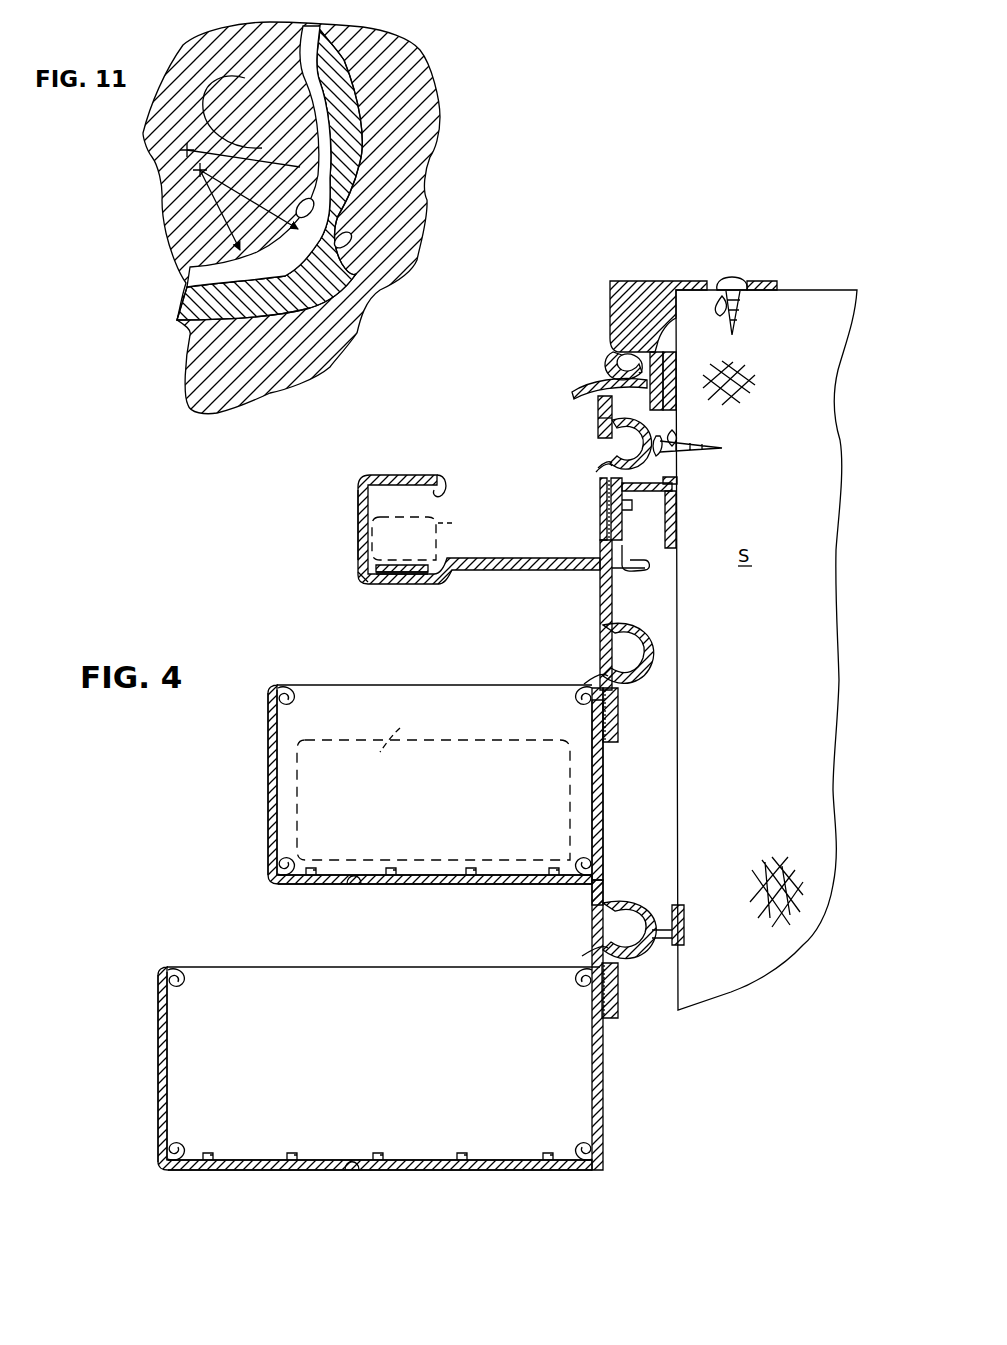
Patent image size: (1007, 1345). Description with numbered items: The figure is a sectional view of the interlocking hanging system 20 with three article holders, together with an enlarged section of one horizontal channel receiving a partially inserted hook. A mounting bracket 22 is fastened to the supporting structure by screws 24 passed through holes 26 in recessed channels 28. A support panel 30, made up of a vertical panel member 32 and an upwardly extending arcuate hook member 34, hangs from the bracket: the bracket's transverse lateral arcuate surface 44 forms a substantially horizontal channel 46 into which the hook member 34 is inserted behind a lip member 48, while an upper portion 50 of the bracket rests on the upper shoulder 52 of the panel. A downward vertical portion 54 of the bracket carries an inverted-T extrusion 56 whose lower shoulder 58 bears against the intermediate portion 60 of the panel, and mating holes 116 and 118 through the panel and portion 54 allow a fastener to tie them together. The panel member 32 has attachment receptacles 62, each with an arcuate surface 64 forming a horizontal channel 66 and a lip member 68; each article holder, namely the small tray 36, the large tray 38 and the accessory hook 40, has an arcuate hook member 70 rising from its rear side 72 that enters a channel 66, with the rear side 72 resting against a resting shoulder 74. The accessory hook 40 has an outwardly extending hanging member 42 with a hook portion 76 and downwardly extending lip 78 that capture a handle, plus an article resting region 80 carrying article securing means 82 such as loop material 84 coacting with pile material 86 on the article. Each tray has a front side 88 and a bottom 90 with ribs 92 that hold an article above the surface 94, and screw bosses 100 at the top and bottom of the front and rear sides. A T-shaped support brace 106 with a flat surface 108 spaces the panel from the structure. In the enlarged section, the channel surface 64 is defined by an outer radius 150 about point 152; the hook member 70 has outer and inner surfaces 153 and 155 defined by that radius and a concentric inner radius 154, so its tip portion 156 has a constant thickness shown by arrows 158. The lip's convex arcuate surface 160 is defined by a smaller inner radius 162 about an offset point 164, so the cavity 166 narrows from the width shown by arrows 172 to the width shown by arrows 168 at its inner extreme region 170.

In FIG. 4, the interlocking hanging system 20 is at (634, 1145).
In FIG. 4, the mounting bracket 22 is at (622, 305).
In FIG. 4, the screws 24 is at (737, 300).
In FIG. 4, the holes 26 is at (722, 300).
In FIG. 4, the recessed channels 28 is at (737, 276).
In FIG. 4, the support panel 30 is at (645, 612).
In FIG. 4, the vertical panel member 32 is at (604, 780).
In FIG. 4, the arcuate hook member 34 is at (655, 370).
In FIG. 4, the small tray 36 is at (266, 800).
In FIG. 4, the large tray 38 is at (156, 1088).
In FIG. 4, the accessory hook 40 is at (452, 534).
In FIG. 4, the outwardly extending hanging member 42 is at (400, 585).
In FIG. 4, the transverse lateral arcuate surface 44 is at (612, 350).
In FIG. 4, the substantially horizontal channel 46 is at (586, 386).
In FIG. 4, the lip member 48 is at (622, 366).
In FIG. 4, the upper portion 50 is at (598, 404).
In FIG. 4, the upper shoulder 52 is at (600, 420).
In FIG. 4, the downward vertical portion 54 is at (632, 528).
In FIG. 4, the inverted-T extrusion 56 is at (636, 556).
In FIG. 4, the lower shoulder 58 is at (620, 567).
In FIG. 4, the intermediate portion 60 is at (600, 580).
In FIG. 4, the attachment receptacle 62 is at (592, 450).
In FIG. 11, the transverse lateral arcuate surface 64 is at (358, 148).
In FIG. 11, the substantially horizontal channel 66 is at (354, 230).
In FIG. 11, the lip member 68 is at (240, 203).
In FIG. 4, the lip member 68 is at (605, 462).
In FIG. 11, the arcuate hook member 70 is at (332, 122).
In FIG. 4, the arcuate hook member 70 is at (620, 903).
In FIG. 4, the rear side 72 is at (600, 505).
In FIG. 4, the resting shoulder 74 is at (598, 482).
In FIG. 4, the hook portion 76 is at (362, 488).
In FIG. 4, the downwardly extending lip 78 is at (442, 490).
In FIG. 4, the article resting region 80 is at (384, 585).
In FIG. 4, the article securing means 82 is at (352, 573).
In FIG. 4, the loop material 84 is at (372, 577).
In FIG. 4, the pile material 86 is at (447, 587).
In FIG. 4, the front side 88 is at (268, 830).
In FIG. 4, the bottom 90 is at (437, 885).
In FIG. 4, the ribs 92 is at (308, 867).
In FIG. 4, the surface 94 is at (352, 885).
In FIG. 4, the screw bosses 100 is at (298, 703).
In FIG. 4, the support brace 106 is at (676, 950).
In FIG. 4, the flat surface 108 is at (684, 926).
In FIG. 4, the hole 116 is at (608, 522).
In FIG. 4, the hole 118 is at (632, 505).
In FIG. 11, the outer radius 150 is at (298, 278).
In FIG. 11, the point 152 is at (196, 172).
In FIG. 11, the outer surface 153 is at (330, 222).
In FIG. 11, the inner radius 154 is at (282, 195).
In FIG. 11, the inner surface 155 is at (325, 190).
In FIG. 11, the tip portion 156 is at (352, 241).
In FIG. 11, the arrows 158 is at (207, 252).
In FIG. 11, the convex arcuate surface 160 is at (303, 167).
In FIG. 11, the inner radius 162 is at (202, 112).
In FIG. 11, the point 164 is at (172, 128).
In FIG. 11, the cavity 166 is at (272, 308).
In FIG. 11, the arrows 168 is at (337, 62).
In FIG. 11, the inner extreme region 170 is at (325, 45).
In FIG. 11, the arrows 172 is at (242, 254).